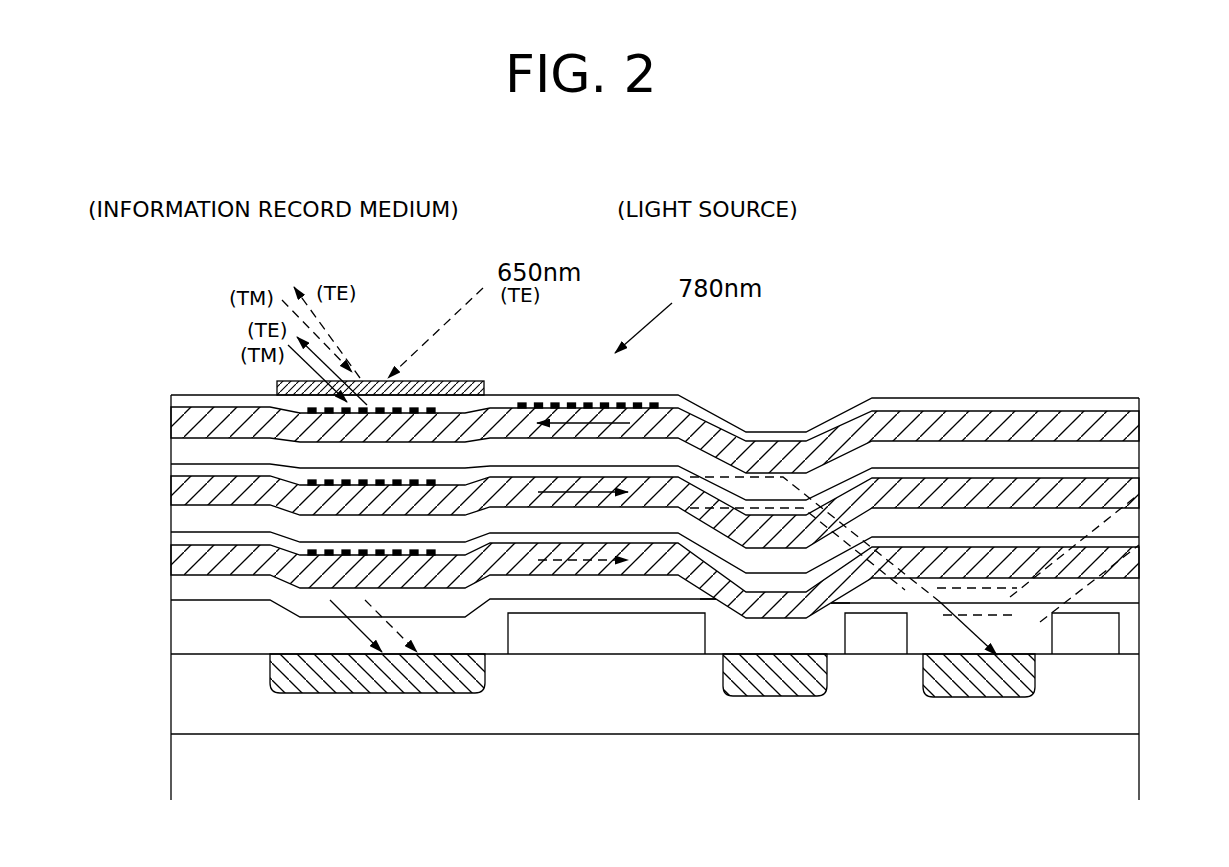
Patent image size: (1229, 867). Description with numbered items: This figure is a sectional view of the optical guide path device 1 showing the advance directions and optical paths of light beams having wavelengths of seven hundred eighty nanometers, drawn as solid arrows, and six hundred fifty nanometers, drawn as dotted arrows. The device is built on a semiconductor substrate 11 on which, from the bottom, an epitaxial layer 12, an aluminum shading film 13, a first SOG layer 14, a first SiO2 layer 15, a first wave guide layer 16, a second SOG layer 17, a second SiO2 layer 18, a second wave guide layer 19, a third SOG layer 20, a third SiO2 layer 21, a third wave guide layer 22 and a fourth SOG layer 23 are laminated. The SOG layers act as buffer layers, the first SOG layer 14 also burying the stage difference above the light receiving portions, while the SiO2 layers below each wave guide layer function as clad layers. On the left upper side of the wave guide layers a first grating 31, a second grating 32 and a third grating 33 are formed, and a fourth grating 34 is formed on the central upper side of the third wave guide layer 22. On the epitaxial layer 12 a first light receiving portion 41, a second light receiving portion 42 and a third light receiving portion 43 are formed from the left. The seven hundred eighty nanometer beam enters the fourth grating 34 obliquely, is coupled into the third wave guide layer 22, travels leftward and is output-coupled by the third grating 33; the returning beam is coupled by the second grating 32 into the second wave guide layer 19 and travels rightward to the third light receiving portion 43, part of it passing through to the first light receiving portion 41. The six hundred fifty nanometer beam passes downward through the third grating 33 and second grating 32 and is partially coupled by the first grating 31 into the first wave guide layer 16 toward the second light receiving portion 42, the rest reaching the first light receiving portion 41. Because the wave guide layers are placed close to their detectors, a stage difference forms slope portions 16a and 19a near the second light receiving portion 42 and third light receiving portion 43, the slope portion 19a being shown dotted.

The optical guide path device 1 is at (1068, 352).
The semiconductor substrate 11 is at (1150, 658).
The epitaxial layer 12 is at (171, 693).
The aluminum shading film 13 is at (613, 645).
The first SOG layer 14 is at (170, 627).
The first SiO2 layer 15 is at (170, 595).
The first wave guide layer 16 is at (170, 565).
The slope portion 16a is at (717, 615).
The second SOG layer 17 is at (171, 538).
The second SiO2 layer 18 is at (171, 521).
The second wave guide layer 19 is at (171, 490).
The slope portion 19a is at (912, 595).
The third SOG layer 20 is at (171, 467).
The third SiO2 layer 21 is at (171, 452).
The third wave guide layer 22 is at (171, 422).
The fourth SOG layer 23 is at (171, 398).
The first grating 31 is at (396, 551).
The second grating 32 is at (396, 481).
The third grating 33 is at (447, 407).
The fourth grating 34 is at (622, 406).
The first light receiving portion 41 is at (484, 694).
The second light receiving portion 42 is at (824, 692).
The third light receiving portion 43 is at (1033, 694).